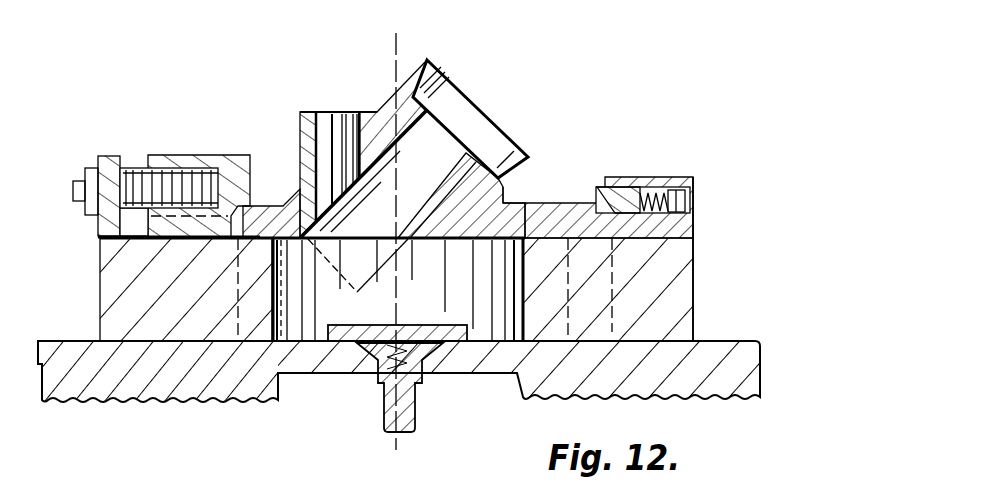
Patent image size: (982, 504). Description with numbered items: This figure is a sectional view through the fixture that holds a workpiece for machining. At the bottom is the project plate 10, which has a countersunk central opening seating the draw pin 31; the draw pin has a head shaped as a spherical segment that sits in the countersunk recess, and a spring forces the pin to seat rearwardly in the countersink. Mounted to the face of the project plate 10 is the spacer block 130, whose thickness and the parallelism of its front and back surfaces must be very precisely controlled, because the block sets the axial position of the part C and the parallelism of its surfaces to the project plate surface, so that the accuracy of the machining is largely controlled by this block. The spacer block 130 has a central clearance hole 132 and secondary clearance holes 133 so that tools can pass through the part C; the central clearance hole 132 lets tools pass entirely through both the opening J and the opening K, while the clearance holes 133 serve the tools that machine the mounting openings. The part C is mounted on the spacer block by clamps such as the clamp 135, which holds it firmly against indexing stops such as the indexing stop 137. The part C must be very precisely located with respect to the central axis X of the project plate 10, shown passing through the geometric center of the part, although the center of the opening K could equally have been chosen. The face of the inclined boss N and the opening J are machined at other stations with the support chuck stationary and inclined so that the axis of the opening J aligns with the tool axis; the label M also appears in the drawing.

The project plate 10 is at (731, 338).
The draw pin 31 is at (417, 412).
The spacer block 130 is at (99, 268).
The central clearance hole 132 is at (310, 322).
The secondary clearance holes 133 is at (612, 287).
The clamp 135 is at (196, 154).
The indexing stop 137 is at (652, 186).
The central axis X is at (399, 45).
The opening K is at (340, 112).
The holder wall M is at (300, 140).
The opening J is at (440, 93).
The inclined boss N is at (518, 183).
The part C is at (572, 204).